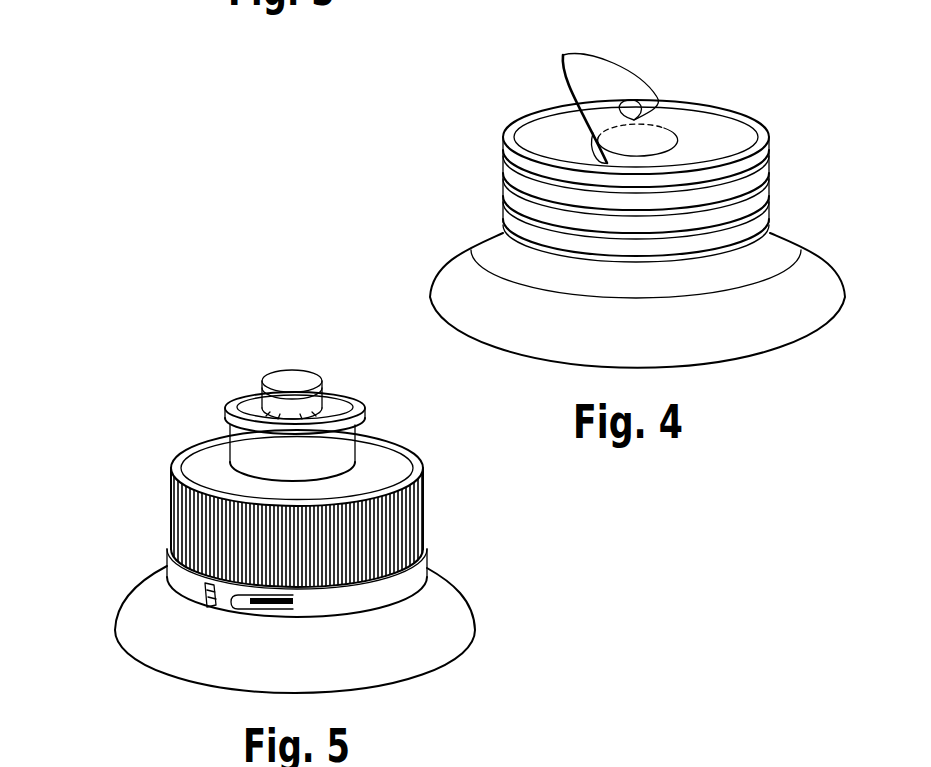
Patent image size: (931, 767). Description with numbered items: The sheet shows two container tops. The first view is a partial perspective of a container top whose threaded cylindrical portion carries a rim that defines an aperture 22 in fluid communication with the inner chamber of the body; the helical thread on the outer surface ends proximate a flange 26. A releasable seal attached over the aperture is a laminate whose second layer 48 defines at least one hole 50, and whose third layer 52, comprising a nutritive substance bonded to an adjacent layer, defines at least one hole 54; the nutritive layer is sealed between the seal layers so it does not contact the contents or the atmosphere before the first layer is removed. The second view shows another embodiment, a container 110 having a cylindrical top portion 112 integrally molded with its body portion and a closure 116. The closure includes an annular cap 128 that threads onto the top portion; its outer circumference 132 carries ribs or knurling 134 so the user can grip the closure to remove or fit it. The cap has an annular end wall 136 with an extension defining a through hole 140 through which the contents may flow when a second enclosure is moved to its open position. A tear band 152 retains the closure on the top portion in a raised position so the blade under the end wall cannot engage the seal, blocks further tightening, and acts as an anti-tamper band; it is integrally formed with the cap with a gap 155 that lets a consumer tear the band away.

In FIG. 4, the aperture 22 is at (648, 128).
In FIG. 4, the flange 26 is at (753, 226).
In FIG. 4, the second layer 48 is at (717, 155).
In FIG. 4, the hole 50 is at (673, 133).
In FIG. 4, the third layer 52 is at (545, 128).
In FIG. 4, the hole 54 is at (628, 101).
In FIG. 5, the container 110 is at (130, 368).
In FIG. 5, the cylindrical top portion 112 is at (423, 652).
In FIG. 5, the closure 116 is at (500, 511).
In FIG. 5, the annular cap 128 is at (418, 480).
In FIG. 5, the outer circumference 132 is at (197, 542).
In FIG. 5, the ribs or knurling 134 is at (392, 548).
In FIG. 5, the annular end wall 136 is at (203, 457).
In FIG. 5, the through hole 140 is at (343, 393).
In FIG. 5, the tear band 152 is at (207, 602).
In FIG. 5, the gap 155 is at (228, 607).